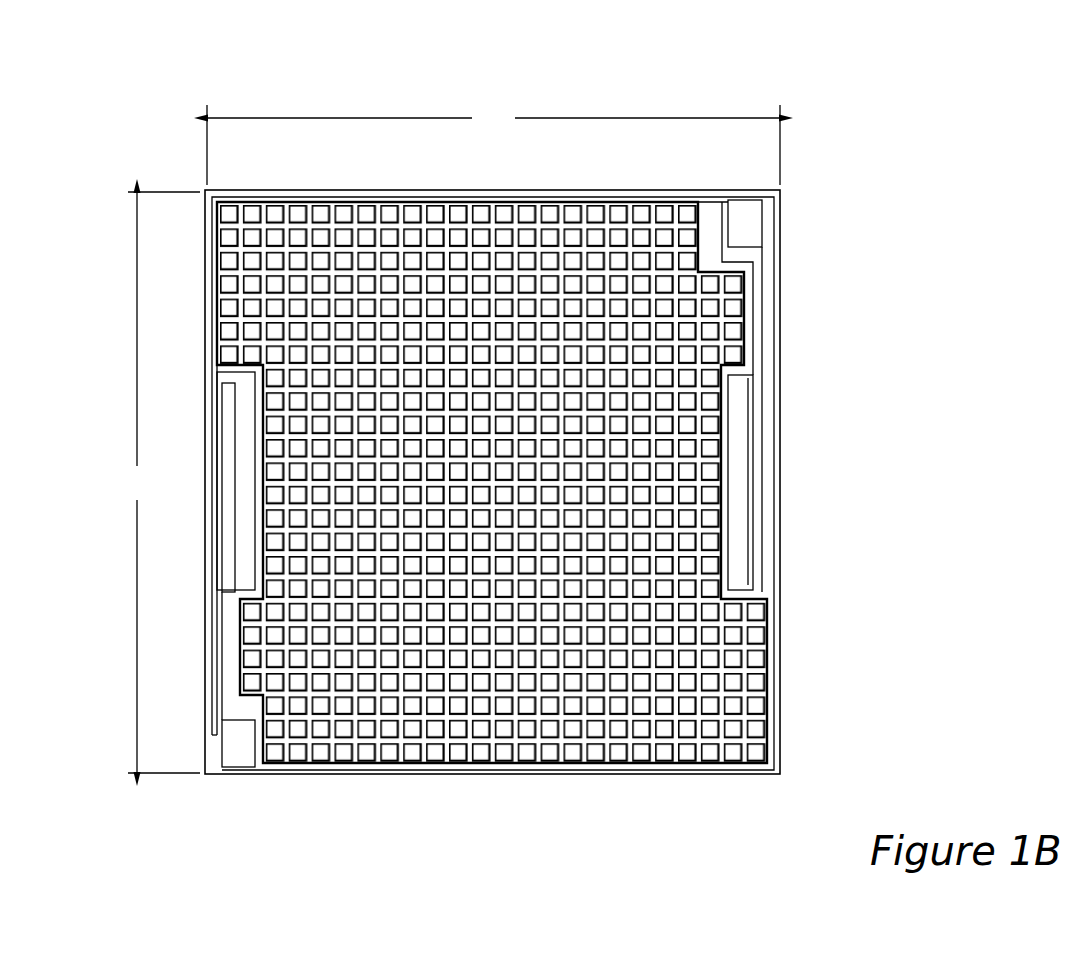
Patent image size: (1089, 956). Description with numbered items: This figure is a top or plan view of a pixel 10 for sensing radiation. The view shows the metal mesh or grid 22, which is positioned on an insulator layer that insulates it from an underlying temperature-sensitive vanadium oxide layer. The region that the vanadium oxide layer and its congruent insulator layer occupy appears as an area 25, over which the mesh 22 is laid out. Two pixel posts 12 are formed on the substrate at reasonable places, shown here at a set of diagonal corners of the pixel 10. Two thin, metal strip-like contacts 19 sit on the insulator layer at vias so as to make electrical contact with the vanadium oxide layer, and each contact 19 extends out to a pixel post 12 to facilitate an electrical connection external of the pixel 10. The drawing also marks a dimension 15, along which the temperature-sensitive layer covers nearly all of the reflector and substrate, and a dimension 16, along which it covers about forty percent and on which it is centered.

The pixel 10 is at (842, 71).
The pixel posts 12 is at (746, 228).
The dimension 15 is at (493, 145).
The dimension 16 is at (161, 482).
The metal strip-like contacts 19 is at (243, 403).
The metal mesh 22 is at (490, 758).
The area 25 is at (663, 520).